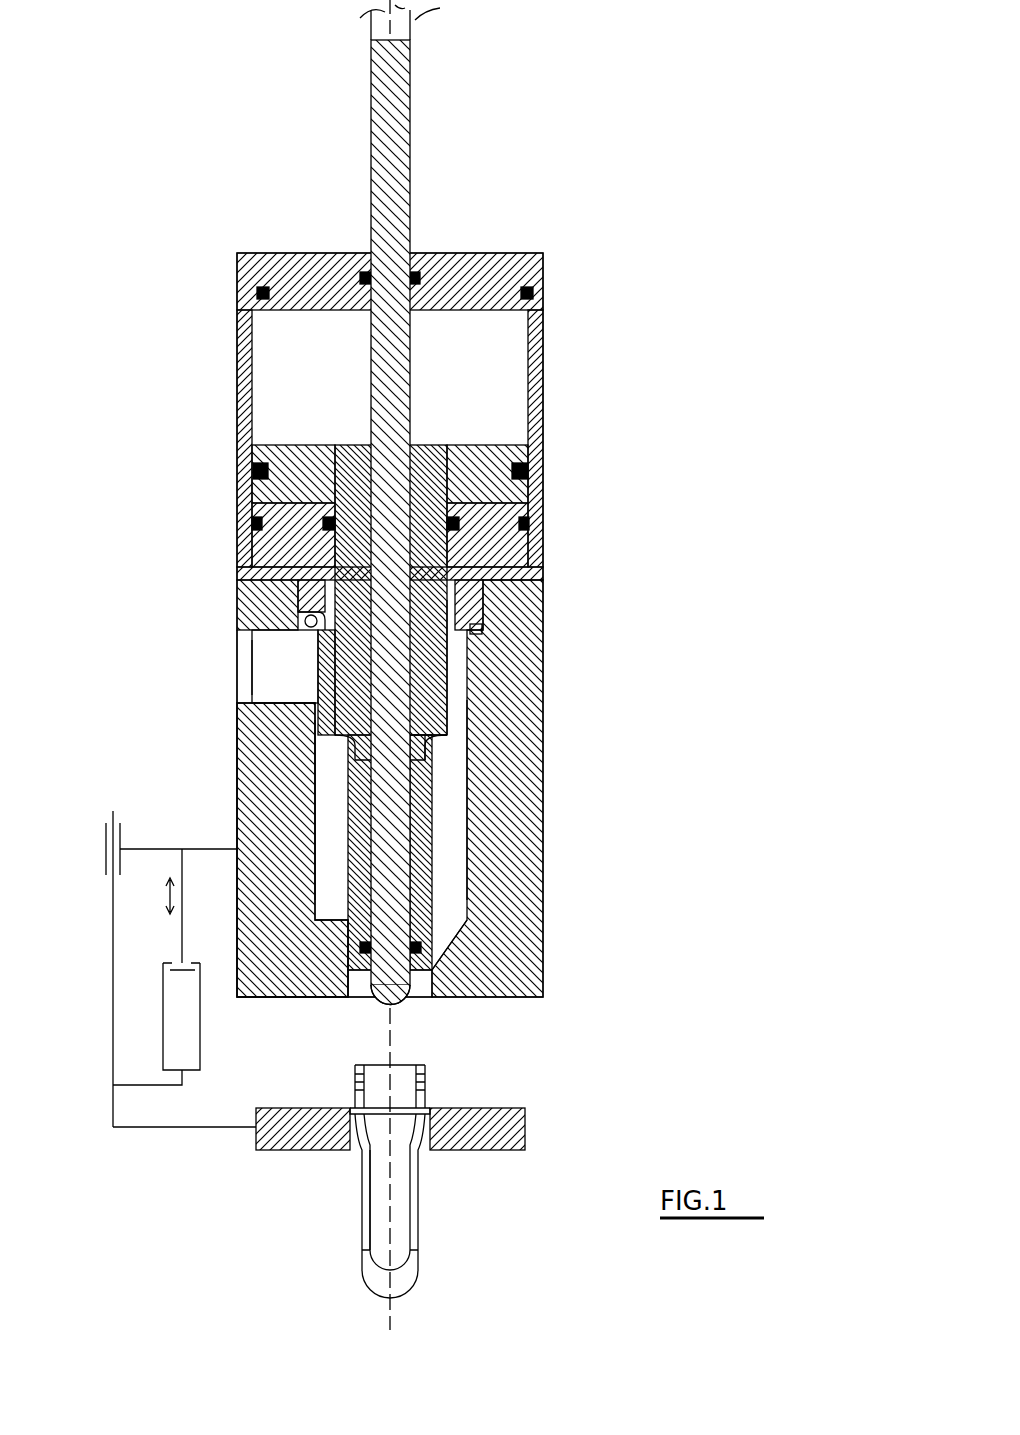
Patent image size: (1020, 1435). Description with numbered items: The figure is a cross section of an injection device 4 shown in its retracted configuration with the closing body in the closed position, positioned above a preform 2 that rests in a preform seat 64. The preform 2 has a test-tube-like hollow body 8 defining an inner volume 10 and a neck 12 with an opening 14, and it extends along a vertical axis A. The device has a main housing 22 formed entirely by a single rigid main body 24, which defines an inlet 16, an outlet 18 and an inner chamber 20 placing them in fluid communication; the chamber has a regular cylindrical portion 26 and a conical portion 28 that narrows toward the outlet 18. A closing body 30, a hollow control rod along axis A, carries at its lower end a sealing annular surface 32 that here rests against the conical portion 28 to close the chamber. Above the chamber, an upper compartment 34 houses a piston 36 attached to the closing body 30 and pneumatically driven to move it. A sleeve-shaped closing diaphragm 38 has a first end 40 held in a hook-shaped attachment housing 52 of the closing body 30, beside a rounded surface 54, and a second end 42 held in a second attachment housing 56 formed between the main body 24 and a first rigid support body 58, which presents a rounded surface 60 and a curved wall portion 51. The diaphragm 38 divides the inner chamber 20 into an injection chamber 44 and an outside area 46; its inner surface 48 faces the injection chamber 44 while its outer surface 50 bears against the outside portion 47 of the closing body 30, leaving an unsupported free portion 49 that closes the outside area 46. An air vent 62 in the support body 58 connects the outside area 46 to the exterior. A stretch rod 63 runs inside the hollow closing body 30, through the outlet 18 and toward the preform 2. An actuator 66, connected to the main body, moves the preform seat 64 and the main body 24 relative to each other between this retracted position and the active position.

The preform 2 is at (400, 1169).
The injection device 4 is at (583, 882).
The hollow body 8 is at (365, 1183).
The inner volume 10 is at (385, 1230).
The neck 12 is at (428, 1085).
The opening 14 is at (378, 1068).
The inlet 16 is at (320, 690).
The outlet 18 is at (418, 1005).
The inner chamber 20 is at (455, 842).
The main housing 22 is at (262, 780).
The main body 24 is at (292, 850).
The regular cylindrical portion 26 is at (320, 835).
The conical portion 28 is at (445, 950).
The closing body 30 is at (452, 800).
The sealing annular surface 32 is at (420, 975).
The upper compartment 34 is at (495, 385).
The piston 36 is at (470, 458).
The closing diaphragm 38 is at (462, 667).
The first end 40 is at (350, 760).
The second end 42 is at (320, 652).
The injection chamber 44 is at (455, 880).
The outside area 46 is at (455, 570).
The outside portion 47 is at (275, 680).
The inner surface 48 is at (330, 700).
The free portion 49 is at (475, 620).
The outer surface 50 is at (300, 600).
The curved wall portion 51 is at (355, 665).
The attachment housing 52 is at (440, 710).
The rounded surface 54 is at (438, 735).
The attachment housing 56 is at (305, 622).
The first rigid support body 58 is at (290, 530).
The rounded surface 60 is at (300, 625).
The air vent 62 is at (305, 565).
The stretch rod 63 is at (400, 180).
The preform seat 64 is at (280, 1143).
The actuator 66 is at (185, 1035).
The axis A is at (388, 1323).